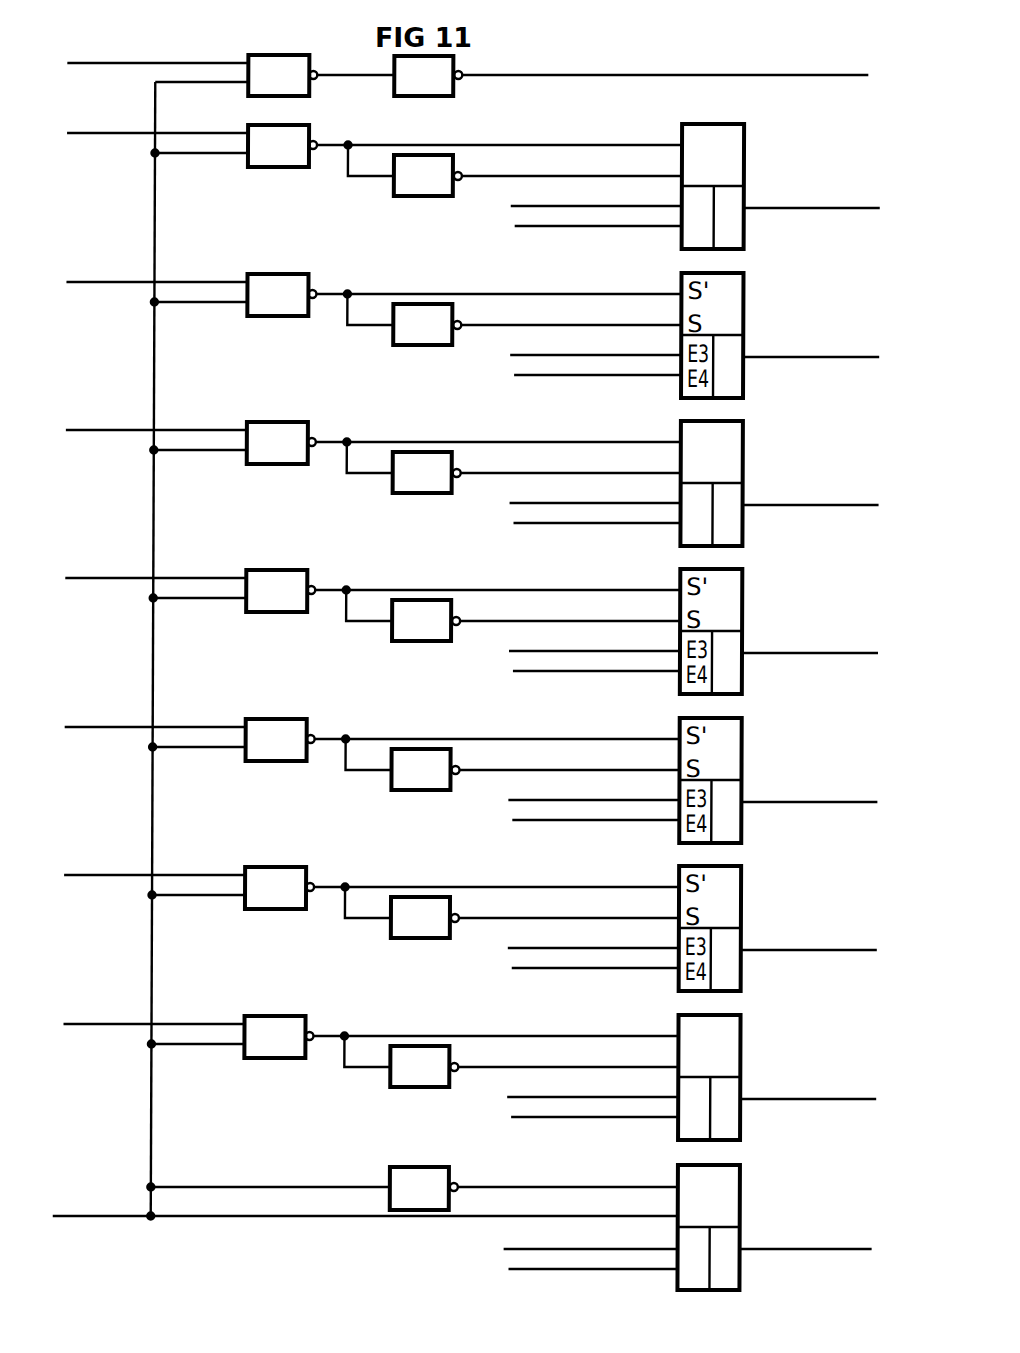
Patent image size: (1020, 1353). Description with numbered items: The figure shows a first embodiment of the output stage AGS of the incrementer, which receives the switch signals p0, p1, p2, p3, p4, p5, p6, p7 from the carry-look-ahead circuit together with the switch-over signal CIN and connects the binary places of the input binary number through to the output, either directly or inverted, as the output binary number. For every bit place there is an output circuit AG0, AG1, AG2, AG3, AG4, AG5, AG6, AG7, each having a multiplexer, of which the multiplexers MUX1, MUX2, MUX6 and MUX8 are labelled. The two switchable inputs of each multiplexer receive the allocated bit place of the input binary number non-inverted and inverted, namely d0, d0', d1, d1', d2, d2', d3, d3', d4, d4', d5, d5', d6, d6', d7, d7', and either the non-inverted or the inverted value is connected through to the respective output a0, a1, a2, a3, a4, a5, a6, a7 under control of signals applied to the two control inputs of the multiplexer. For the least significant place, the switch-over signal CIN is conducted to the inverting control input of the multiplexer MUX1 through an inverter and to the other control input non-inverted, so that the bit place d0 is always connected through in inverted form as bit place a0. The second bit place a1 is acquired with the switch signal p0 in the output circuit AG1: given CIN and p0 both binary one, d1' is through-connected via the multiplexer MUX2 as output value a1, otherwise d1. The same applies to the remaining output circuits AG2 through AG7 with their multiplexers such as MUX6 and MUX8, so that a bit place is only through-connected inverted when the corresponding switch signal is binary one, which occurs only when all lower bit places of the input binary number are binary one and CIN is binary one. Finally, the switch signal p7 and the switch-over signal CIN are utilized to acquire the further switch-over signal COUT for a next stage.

The output stage AGS is at (169, 1288).
The switch-over signal for a next stage COUT is at (511, 72).
The switch-over signal CIN is at (365, 1201).
The switch signal p7 is at (156, 43).
The switch signal p6 is at (156, 113).
The switch signal p5 is at (155, 262).
The switch signal p4 is at (155, 410).
The switch signal p3 is at (154, 558).
The switch signal p2 is at (154, 707).
The switch signal p1 is at (153, 855).
The switch signal p0 is at (153, 1004).
The output circuit AG7 is at (416, 152).
The output circuit AG6 is at (416, 301).
The output circuit AG5 is at (415, 449).
The output circuit AG4 is at (415, 597).
The output circuit AG3 is at (414, 746).
The output circuit AG2 is at (413, 894).
The output circuit AG1 is at (413, 1043).
The output circuit AG0 is at (412, 1216).
The bit place of the input binary number d7 is at (582, 199).
The inverted bit place of the input binary number d7' is at (582, 219).
The bit place of the input binary number d6 is at (581, 348).
The inverted bit place of the input binary number d6' is at (581, 368).
The bit place of the input binary number d5 is at (581, 496).
The inverted bit place of the input binary number d5' is at (580, 516).
The bit place of the input binary number d4 is at (580, 644).
The inverted bit place of the input binary number d4' is at (580, 664).
The bit place of the input binary number d3 is at (579, 793).
The inverted bit place of the input binary number d3' is at (579, 813).
The bit place of the input binary number d2 is at (579, 941).
The inverted bit place of the input binary number d2' is at (579, 961).
The bit place of the input binary number d1 is at (578, 1090).
The inverted bit place of the input binary number d1' is at (578, 1110).
The bit place of the input binary number d0 is at (575, 1246).
The inverted bit place of the input binary number d0' is at (574, 1274).
The bit place of the output binary number a7 is at (812, 194).
The bit place of the output binary number a6 is at (811, 343).
The bit place of the output binary number a5 is at (811, 491).
The bit place of the output binary number a4 is at (810, 639).
The bit place of the output binary number a3 is at (809, 788).
The bit place of the output binary number a2 is at (809, 936).
The bit place of the output binary number a1 is at (808, 1085).
The bit place of the output binary number a0 is at (806, 1236).
The multiplexer MUX8 is at (760, 186).
The multiplexer MUX6 is at (759, 483).
The multiplexer MUX2 is at (754, 1074).
The multiplexer MUX1 is at (746, 1230).